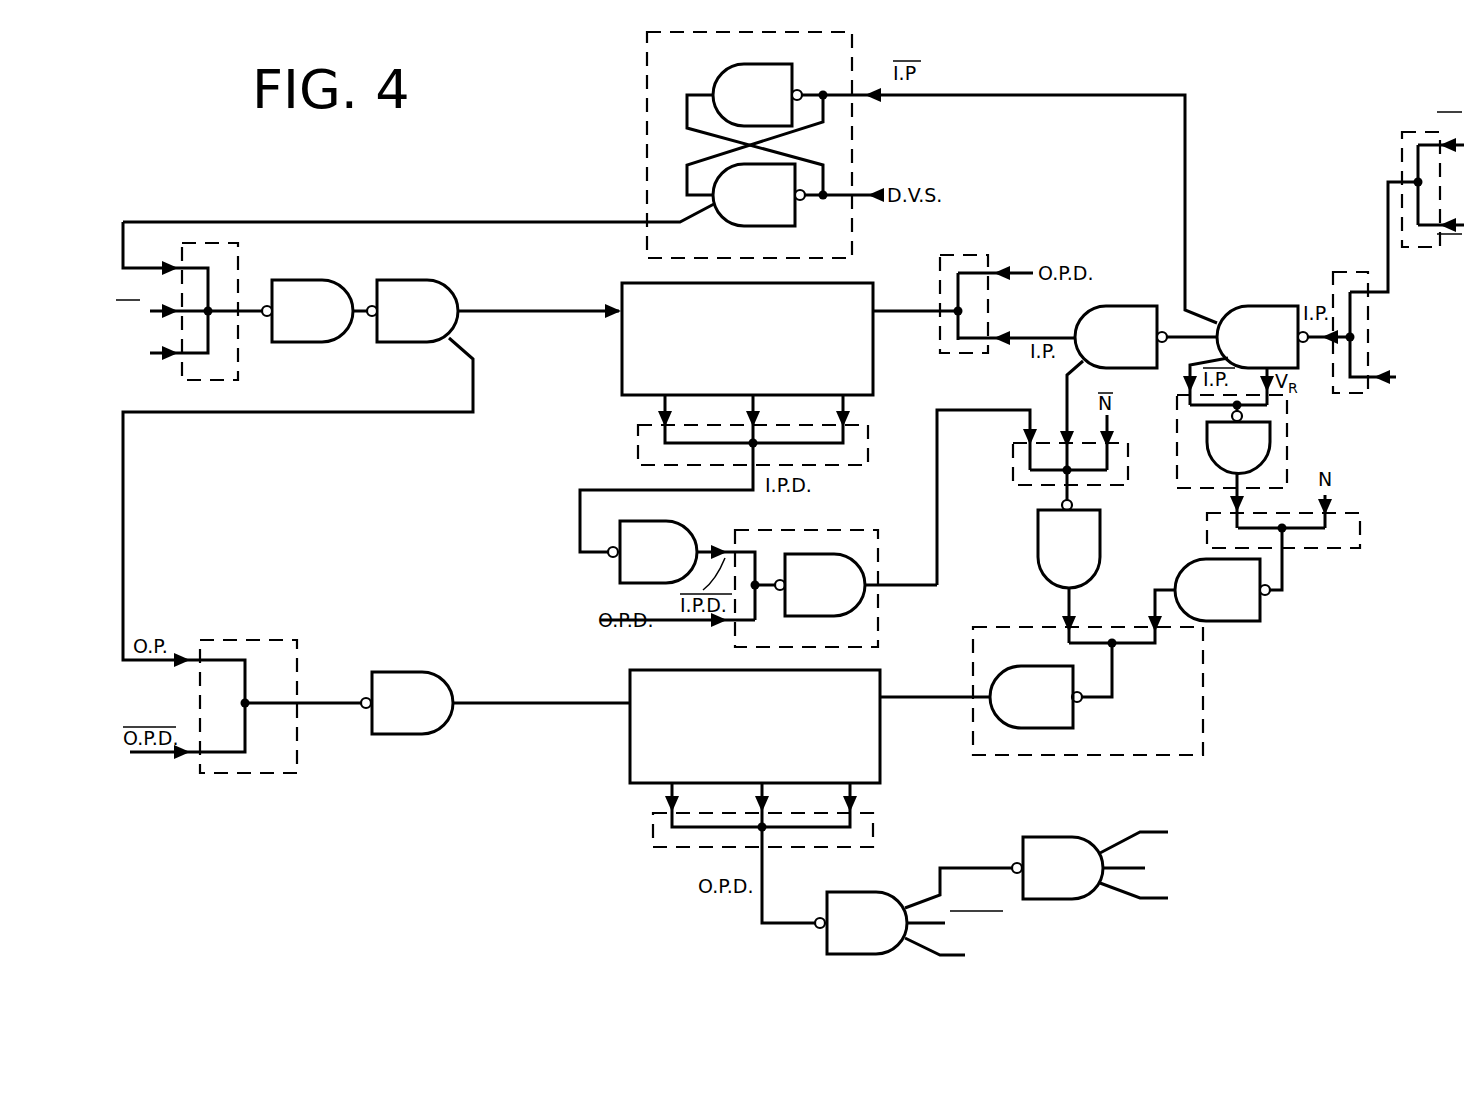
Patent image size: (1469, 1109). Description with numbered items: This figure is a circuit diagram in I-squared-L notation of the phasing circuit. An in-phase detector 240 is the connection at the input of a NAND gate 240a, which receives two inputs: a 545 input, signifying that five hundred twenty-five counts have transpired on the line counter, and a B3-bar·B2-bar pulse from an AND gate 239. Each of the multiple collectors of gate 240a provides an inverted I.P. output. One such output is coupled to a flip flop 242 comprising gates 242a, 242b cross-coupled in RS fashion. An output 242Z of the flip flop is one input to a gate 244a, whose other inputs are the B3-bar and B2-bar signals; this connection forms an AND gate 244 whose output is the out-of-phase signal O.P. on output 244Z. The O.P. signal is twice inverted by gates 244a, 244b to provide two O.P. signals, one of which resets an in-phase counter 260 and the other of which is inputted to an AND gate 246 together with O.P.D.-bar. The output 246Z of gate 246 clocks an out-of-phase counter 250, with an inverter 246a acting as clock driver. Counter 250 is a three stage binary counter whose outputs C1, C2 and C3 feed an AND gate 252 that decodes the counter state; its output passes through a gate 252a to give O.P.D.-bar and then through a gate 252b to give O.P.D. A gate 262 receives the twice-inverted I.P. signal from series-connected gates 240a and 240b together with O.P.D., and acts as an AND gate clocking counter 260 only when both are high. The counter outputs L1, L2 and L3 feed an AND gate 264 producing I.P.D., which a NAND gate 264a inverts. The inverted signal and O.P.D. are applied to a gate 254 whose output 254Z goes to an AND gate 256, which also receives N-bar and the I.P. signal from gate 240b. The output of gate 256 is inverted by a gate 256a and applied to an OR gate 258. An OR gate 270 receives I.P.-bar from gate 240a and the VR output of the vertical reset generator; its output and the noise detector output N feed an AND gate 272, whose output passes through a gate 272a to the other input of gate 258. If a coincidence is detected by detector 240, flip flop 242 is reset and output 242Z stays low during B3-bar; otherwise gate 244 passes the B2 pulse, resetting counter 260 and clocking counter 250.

The AND gate 239 is at (1398, 127).
The in-phase detector 240 is at (1210, 275).
The NAND gate 240a is at (1267, 312).
The NAND gate 240b is at (1099, 309).
The flip flop 242 is at (691, 145).
The gate 242a is at (744, 64).
The gate 242b is at (740, 226).
The output of flip flop 242Z is at (526, 220).
The AND gate 244 is at (242, 274).
The gate 244a is at (336, 332).
The gate 244b is at (438, 281).
The output of AND gate 244Z is at (252, 320).
The AND gate 246 is at (235, 783).
The inverter 246a is at (416, 672).
The output of AND gate 246Z is at (334, 716).
The out-of-phase counter 250 is at (615, 756).
The AND gate 252 is at (622, 835).
The gate 252a is at (864, 907).
The gate 252b is at (1060, 846).
The gate 254 is at (838, 514).
The output of gate 254Z is at (904, 589).
The AND gate 256 is at (1003, 478).
The gate 256a is at (1043, 570).
The OR gate 258 is at (1212, 697).
The in-phase counter 260 is at (612, 372).
The gate 262 is at (967, 248).
The AND gate 264 is at (624, 445).
The NAND gate 264a is at (680, 522).
The OR gate 270 is at (1297, 434).
The AND gate 272 is at (1342, 556).
The gate 272a is at (1248, 614).
The 545 input 545 is at (1391, 333).